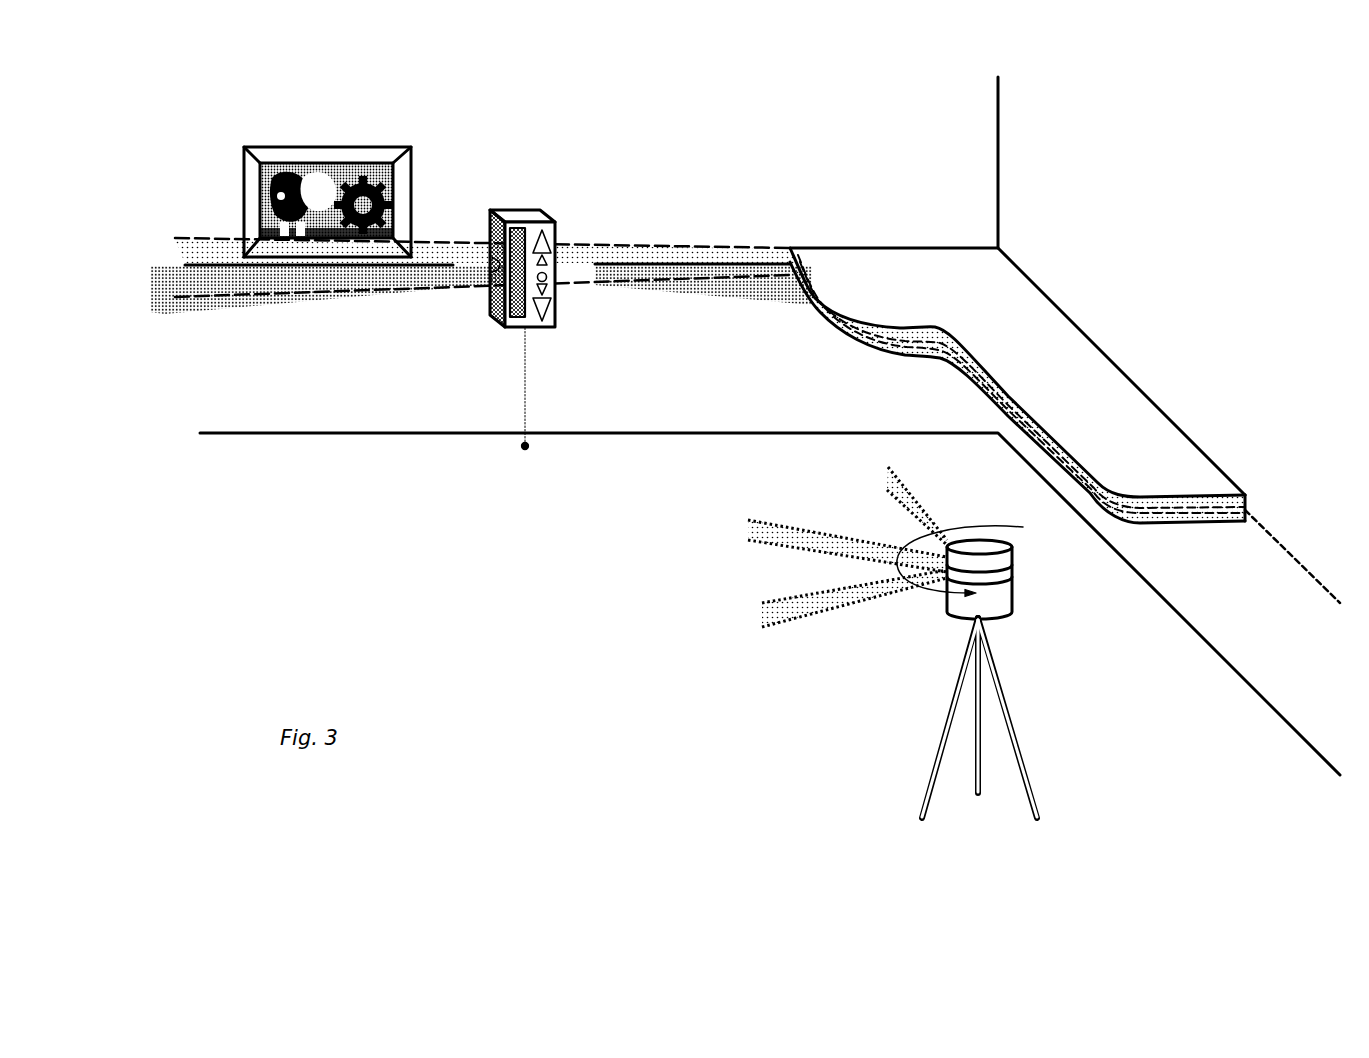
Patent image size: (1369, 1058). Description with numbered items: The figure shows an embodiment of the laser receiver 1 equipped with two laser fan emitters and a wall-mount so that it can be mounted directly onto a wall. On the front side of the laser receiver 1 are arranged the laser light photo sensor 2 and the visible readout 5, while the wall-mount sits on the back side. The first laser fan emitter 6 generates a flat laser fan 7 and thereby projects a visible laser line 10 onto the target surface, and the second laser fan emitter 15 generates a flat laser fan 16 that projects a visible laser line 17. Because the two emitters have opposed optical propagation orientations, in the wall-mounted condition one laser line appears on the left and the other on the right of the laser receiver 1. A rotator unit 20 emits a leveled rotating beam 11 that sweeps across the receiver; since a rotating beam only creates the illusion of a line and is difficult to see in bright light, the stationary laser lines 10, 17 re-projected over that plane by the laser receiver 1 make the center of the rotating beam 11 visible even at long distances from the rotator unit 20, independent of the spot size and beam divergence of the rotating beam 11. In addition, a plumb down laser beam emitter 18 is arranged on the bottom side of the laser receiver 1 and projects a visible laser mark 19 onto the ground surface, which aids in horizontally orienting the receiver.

The laser receiver 1 is at (512, 263).
The laser light photo sensor 2 is at (517, 318).
The visible readout 5 is at (547, 306).
The first laser fan emitter 6 is at (498, 267).
The flat laser fan 7 is at (443, 272).
The visible laser line 10 is at (420, 265).
The leveled rotating beam 11 is at (885, 333).
The second laser fan emitter 15 is at (558, 255).
The flat laser fan 16 is at (737, 288).
The visible laser line 17 is at (665, 263).
The plumb down laser beam emitter 18 is at (530, 335).
The visible laser mark 19 is at (530, 449).
The rotator unit 20 is at (1030, 620).